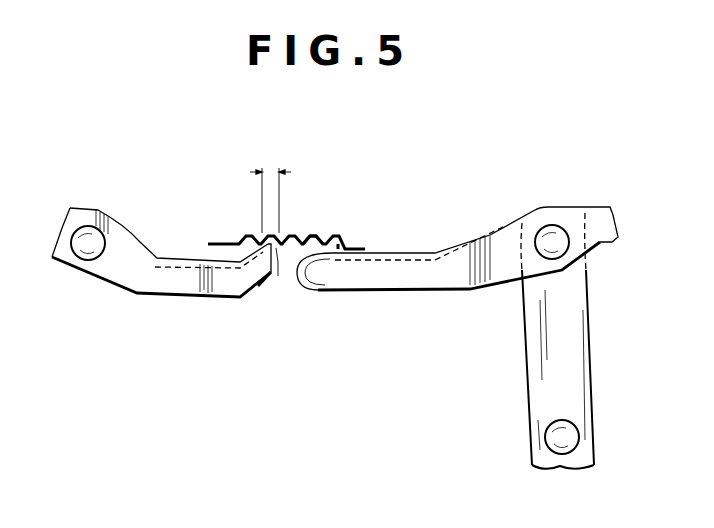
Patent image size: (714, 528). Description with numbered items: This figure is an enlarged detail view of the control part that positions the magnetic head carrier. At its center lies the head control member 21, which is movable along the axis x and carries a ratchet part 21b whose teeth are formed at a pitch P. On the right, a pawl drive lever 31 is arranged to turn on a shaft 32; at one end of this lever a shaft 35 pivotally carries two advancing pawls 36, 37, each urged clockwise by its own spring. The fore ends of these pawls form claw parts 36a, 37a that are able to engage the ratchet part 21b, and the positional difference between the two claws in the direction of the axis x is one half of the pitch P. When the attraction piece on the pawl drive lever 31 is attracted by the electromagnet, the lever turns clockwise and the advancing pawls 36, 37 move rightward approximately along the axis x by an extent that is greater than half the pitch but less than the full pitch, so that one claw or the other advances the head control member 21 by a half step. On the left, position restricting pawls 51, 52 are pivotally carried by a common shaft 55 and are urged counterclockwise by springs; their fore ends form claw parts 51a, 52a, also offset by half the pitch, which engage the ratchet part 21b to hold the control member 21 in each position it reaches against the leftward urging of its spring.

The head control member 21 is at (305, 213).
The ratchet part 21b is at (316, 237).
The pitch P is at (270, 187).
The pawl drive lever 31 is at (585, 352).
The shaft 32 is at (573, 433).
The shaft 35 is at (549, 226).
The advancing pawl 36 is at (390, 253).
The claw part 36a is at (341, 246).
The advancing pawl 37 is at (392, 292).
The claw part 37a is at (298, 284).
The position restricting pawl 51 is at (195, 262).
The claw part 51a is at (275, 252).
The position restricting pawl 52 is at (180, 296).
The claw part 52a is at (270, 276).
The common shaft 55 is at (82, 262).